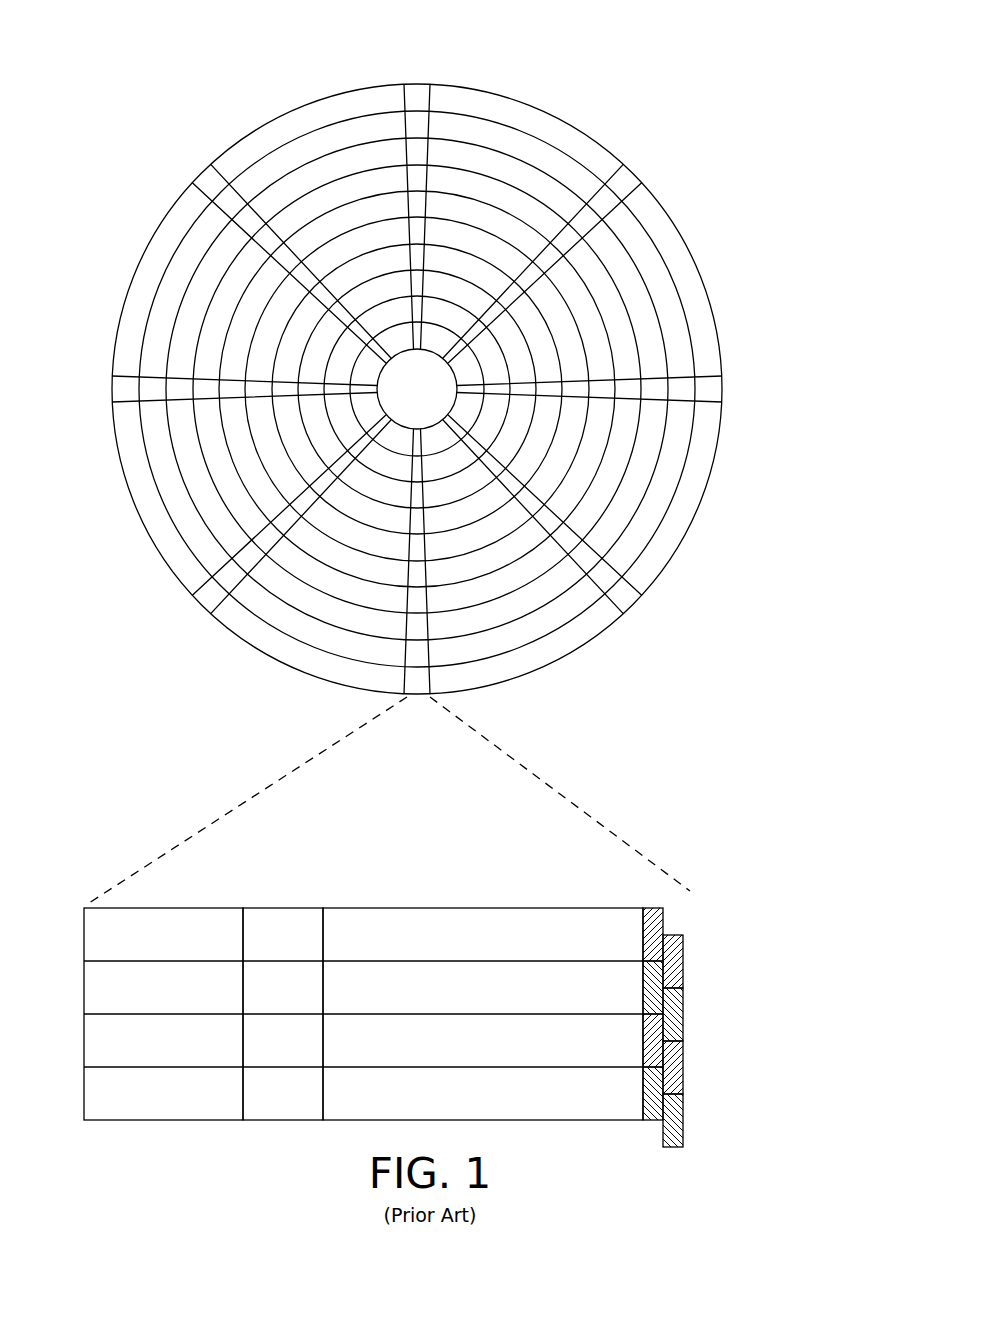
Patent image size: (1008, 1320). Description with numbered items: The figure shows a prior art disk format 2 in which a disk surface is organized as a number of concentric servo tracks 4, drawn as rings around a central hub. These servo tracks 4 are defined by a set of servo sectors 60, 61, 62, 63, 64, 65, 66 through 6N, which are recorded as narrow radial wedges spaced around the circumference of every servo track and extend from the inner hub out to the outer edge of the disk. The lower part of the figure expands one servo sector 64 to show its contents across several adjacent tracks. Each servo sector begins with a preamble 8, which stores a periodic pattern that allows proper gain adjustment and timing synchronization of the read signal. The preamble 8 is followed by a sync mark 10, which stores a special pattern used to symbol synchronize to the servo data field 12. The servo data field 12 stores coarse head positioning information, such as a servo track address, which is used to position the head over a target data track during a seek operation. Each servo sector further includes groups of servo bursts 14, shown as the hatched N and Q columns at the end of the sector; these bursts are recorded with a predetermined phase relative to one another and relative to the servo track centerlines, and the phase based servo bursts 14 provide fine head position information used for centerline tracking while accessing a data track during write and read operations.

The disk format 2 is at (417, 400).
The servo tracks 4 is at (520, 147).
The servo sector 60 is at (417, 94).
The servo sector 61 is at (625, 181).
The servo sector 62 is at (714, 392).
The servo sector 63 is at (626, 598).
The servo sector 64 is at (283, 768).
The servo sector 65 is at (207, 600).
The servo sector 66 is at (118, 390).
The servo sector 6N is at (138, 170).
The preamble 8 is at (172, 906).
The sync mark 10 is at (287, 906).
The servo data field 12 is at (471, 906).
The servo bursts 14 is at (679, 907).